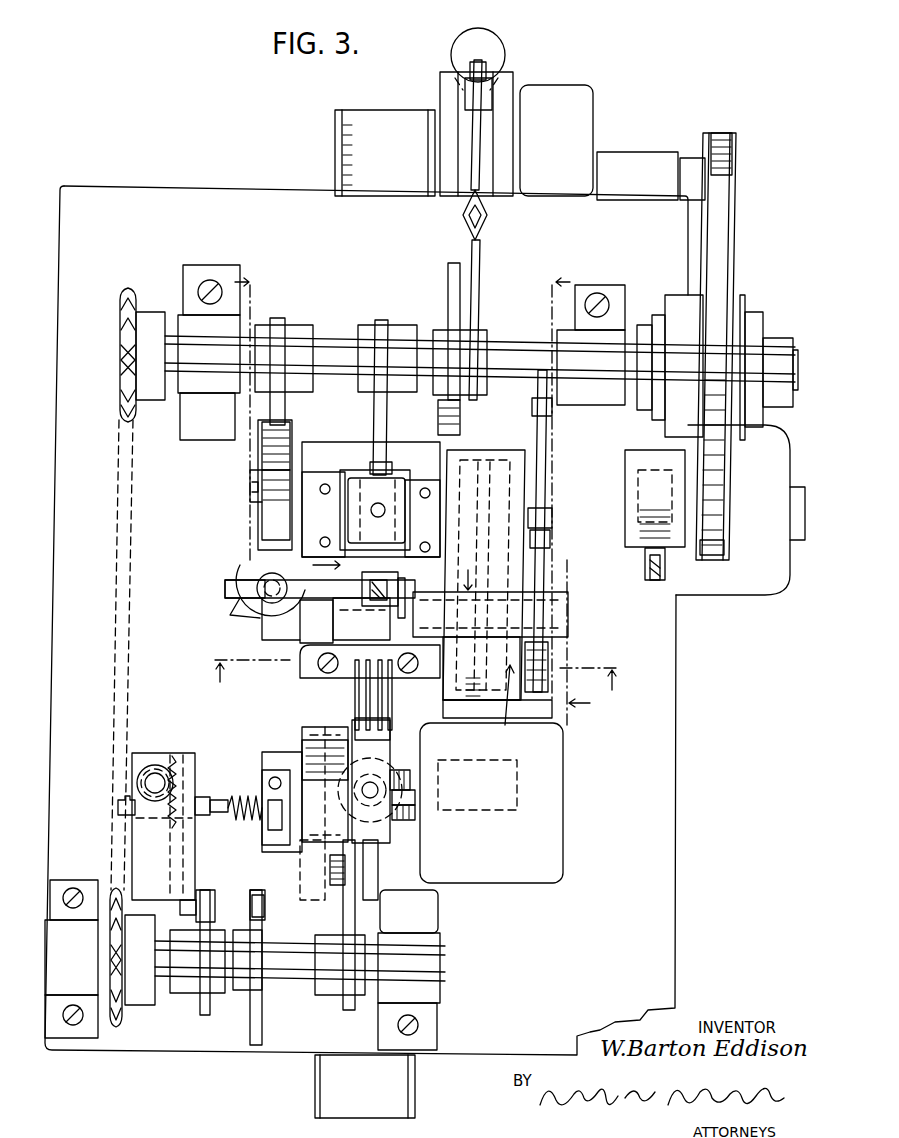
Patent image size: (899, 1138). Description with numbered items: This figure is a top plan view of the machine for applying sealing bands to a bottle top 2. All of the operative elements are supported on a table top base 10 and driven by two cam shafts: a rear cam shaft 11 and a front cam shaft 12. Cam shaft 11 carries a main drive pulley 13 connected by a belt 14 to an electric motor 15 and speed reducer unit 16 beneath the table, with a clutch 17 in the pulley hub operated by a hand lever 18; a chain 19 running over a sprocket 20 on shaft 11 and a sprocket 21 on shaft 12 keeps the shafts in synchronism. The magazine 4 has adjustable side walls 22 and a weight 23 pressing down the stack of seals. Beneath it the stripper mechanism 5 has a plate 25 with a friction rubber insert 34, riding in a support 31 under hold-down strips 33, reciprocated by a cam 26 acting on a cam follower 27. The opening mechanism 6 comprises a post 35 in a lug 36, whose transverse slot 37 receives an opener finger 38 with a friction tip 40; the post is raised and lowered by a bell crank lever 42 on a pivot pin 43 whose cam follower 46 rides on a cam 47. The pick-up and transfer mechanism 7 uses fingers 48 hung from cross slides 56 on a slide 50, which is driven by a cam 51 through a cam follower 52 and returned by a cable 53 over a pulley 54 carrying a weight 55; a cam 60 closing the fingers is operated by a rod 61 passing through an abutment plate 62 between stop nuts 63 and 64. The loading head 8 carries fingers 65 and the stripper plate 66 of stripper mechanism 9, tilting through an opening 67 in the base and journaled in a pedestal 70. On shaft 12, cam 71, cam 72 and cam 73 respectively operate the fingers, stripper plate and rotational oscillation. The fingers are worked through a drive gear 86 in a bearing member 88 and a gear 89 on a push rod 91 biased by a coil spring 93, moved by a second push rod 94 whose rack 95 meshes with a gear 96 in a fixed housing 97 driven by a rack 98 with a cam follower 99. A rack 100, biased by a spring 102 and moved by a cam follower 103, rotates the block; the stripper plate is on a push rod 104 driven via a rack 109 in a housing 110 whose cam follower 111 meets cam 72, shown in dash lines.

The bottle top 2 is at (388, 826).
The magazine 4 is at (294, 520).
The stripper mechanism 5 is at (363, 413).
The opening mechanism 6 is at (216, 597).
The pick-up and transfer mechanism 7 is at (516, 756).
The loading head 8 is at (425, 756).
The stripper mechanism 9 is at (358, 732).
The table top base 10 is at (685, 712).
The cam shaft 11 is at (510, 337).
The cam shaft 12 is at (300, 992).
The main drive pulley 13 is at (738, 240).
The belt 14 is at (725, 170).
The electric motor 15 is at (765, 598).
The speed reducer unit 16 is at (593, 133).
The clutch 17 is at (648, 448).
The hand lever 18 is at (653, 598).
The chain 19 is at (117, 522).
The sprocket 20 is at (116, 301).
The sprocket 21 is at (125, 1016).
The adjustable side walls 22 is at (405, 527).
The weight 23 is at (385, 507).
The plate 25 is at (316, 621).
The cam 26 is at (383, 314).
The cam follower 27 is at (372, 468).
The support 31 is at (295, 638).
The hold-down strips 33 is at (300, 652).
The friction rubber insert 34 is at (400, 582).
The post 35 is at (268, 612).
The lug 36 is at (255, 582).
The transverse slot 37 is at (245, 600).
The opener finger 38 is at (240, 588).
The friction tip 40 is at (378, 582).
The bell crank lever 42 is at (262, 512).
The pivot pin 43 is at (252, 478).
The cam follower 46 is at (272, 432).
The cam 47 is at (279, 325).
The pick-up and transfer fingers 48 is at (410, 586).
The slide 50 is at (505, 472).
The cam 51 is at (447, 272).
The cam follower 52 is at (438, 418).
The cable 53 is at (483, 138).
The pulley 54 is at (488, 70).
The weight 55 is at (505, 48).
The cross slides 56 is at (385, 630).
The cam 60 is at (549, 613).
The rod 61 is at (548, 438).
The abutment plate 62 is at (552, 515).
The stop nut 63 is at (547, 536).
The stop nut 64 is at (532, 408).
The fingers 65 is at (360, 680).
The stripper plate 66 is at (386, 725).
The opening 67 is at (556, 822).
The pedestal 70 is at (305, 760).
The cam 71 is at (206, 1016).
The cam 72 is at (256, 1046).
The cam 73 is at (348, 1011).
The drive gear 86 is at (410, 782).
The bearing member 88 is at (412, 798).
The gear 89 is at (413, 812).
The push rod 91 is at (218, 813).
The coil spring 93 is at (243, 795).
The second push rod 94 is at (203, 797).
The rack 95 is at (124, 796).
The gear 96 is at (155, 766).
The fixed housing 97 is at (137, 758).
The rack 98 is at (180, 752).
The cam follower 99 is at (208, 890).
The rack 100 is at (324, 900).
The spring 102 is at (322, 728).
The cam follower 103 is at (355, 873).
The push rod 104 is at (375, 895).
The rack 109 is at (275, 828).
The housing 110 is at (268, 880).
The cam follower 111 is at (268, 775).